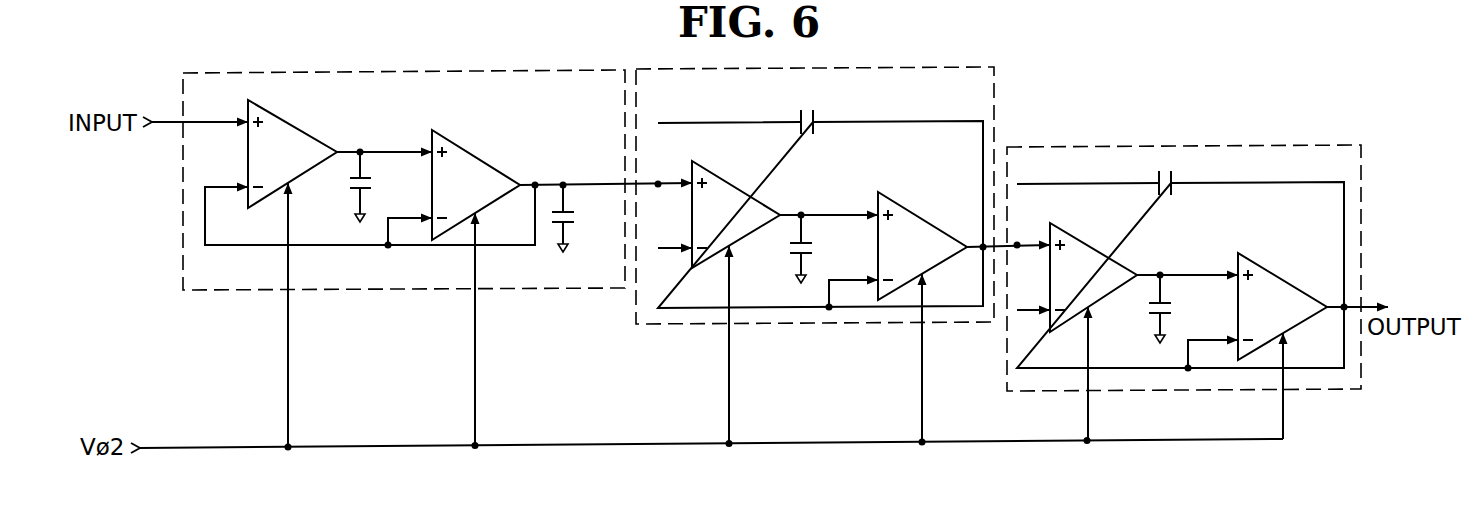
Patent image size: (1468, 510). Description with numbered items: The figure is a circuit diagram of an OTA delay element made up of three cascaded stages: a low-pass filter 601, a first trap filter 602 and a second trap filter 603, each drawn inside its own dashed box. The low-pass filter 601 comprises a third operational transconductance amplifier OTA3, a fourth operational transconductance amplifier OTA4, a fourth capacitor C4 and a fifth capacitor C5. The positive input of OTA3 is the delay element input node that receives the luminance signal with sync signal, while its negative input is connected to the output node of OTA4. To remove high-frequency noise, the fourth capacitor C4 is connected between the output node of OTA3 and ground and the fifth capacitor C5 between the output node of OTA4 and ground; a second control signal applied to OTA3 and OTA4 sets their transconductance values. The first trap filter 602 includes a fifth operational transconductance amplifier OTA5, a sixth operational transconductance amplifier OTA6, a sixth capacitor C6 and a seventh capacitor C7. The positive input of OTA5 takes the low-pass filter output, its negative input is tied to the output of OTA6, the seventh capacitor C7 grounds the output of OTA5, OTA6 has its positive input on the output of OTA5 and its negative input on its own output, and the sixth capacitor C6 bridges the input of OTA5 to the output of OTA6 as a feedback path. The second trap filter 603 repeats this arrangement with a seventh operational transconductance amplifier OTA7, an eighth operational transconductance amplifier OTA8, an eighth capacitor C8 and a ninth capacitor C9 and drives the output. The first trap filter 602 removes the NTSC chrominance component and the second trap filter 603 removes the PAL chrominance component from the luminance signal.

The low-pass filter 601 is at (183, 226).
The first trap filter 602 is at (994, 84).
The second trap filter 603 is at (1160, 147).
The third operational transconductance amplifier OTA3 is at (292, 273).
The fourth operational transconductance amplifier OTA4 is at (476, 287).
The fifth operational transconductance amplifier OTA5 is at (736, 302).
The sixth operational transconductance amplifier OTA6 is at (922, 317).
The seventh operational transconductance amplifier OTA7 is at (1093, 331).
The eighth operational transconductance amplifier OTA8 is at (1282, 346).
The fourth capacitor C4 is at (380, 187).
The fifth capacitor C5 is at (583, 218).
The sixth capacitor C6 is at (803, 138).
The seventh capacitor C7 is at (820, 249).
The eighth capacitor C8 is at (1163, 199).
The ninth capacitor C9 is at (1179, 309).